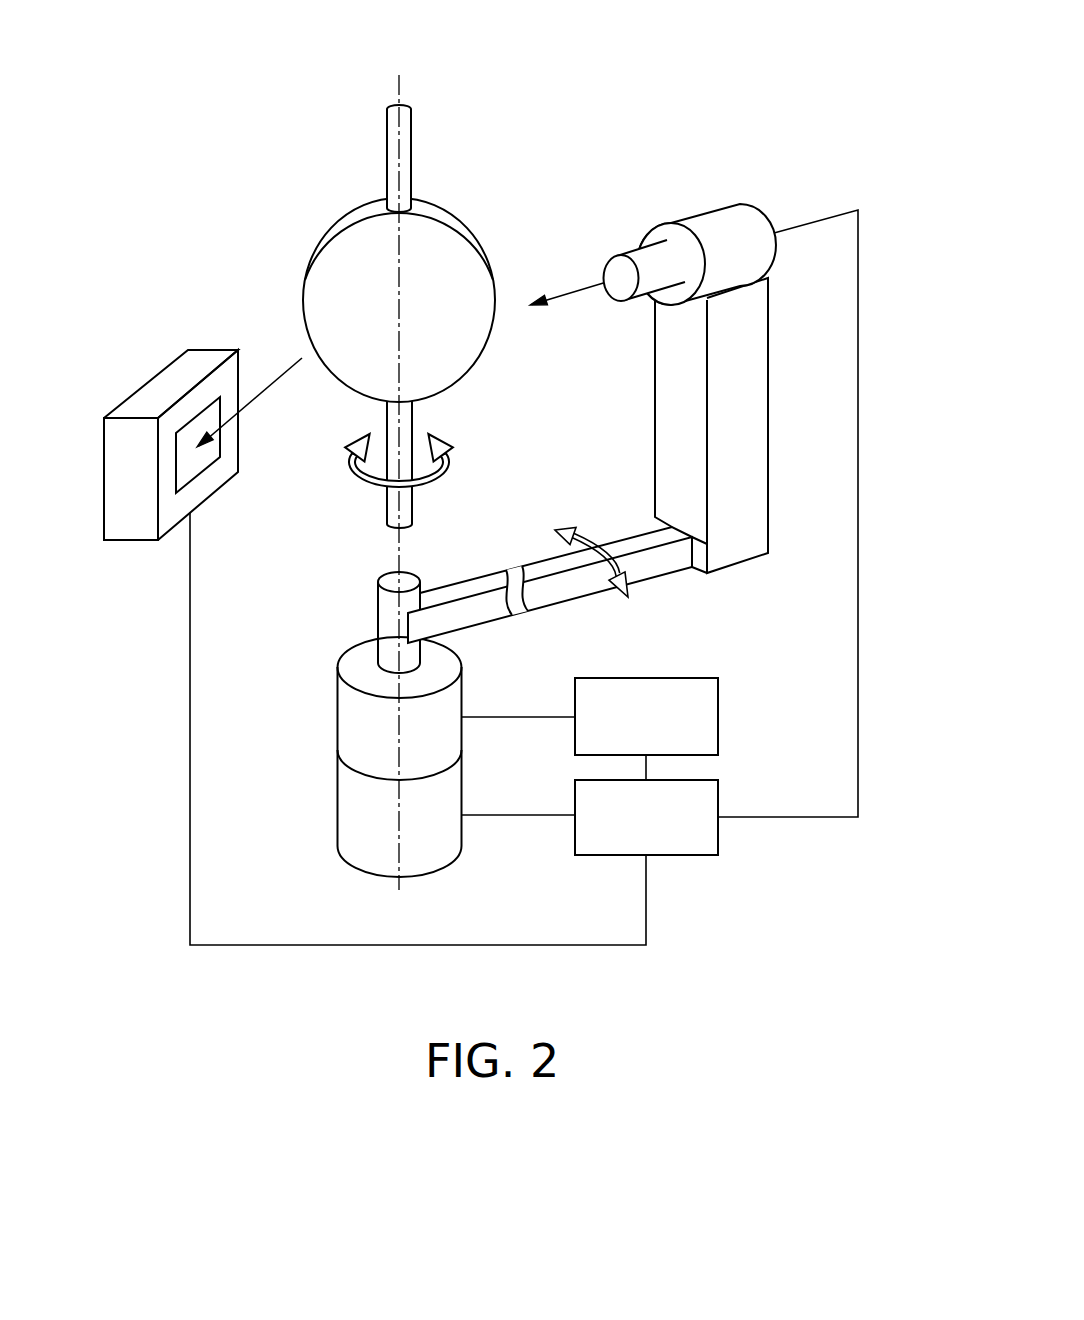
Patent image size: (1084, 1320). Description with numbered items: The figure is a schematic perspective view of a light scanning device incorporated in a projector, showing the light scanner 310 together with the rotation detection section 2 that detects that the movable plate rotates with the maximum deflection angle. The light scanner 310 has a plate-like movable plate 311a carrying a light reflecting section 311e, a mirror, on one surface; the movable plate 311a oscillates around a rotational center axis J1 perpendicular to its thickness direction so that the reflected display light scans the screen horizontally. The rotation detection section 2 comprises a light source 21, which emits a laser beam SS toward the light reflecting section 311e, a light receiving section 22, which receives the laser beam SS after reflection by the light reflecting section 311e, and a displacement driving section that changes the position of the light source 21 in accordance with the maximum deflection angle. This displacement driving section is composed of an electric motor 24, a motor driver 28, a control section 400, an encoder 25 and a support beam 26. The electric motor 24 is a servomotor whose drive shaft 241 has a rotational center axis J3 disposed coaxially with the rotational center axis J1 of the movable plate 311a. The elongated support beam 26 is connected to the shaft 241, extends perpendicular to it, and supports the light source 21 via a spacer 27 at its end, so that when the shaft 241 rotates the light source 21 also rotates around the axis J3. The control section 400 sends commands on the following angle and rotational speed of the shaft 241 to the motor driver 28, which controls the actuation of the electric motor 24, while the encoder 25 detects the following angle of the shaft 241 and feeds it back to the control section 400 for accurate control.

The rotation detection section 2 is at (648, 83).
The light scanner 310 is at (458, 133).
The movable plate 311a is at (470, 221).
The light reflecting section 311e is at (468, 348).
The light source 21 is at (762, 202).
The light receiving section 22 is at (155, 367).
The spacer 27 is at (760, 379).
The support beam 26 is at (534, 557).
The rotational center axis J1 is at (393, 511).
The rotational center axis J3 is at (393, 582).
The shaft 241 is at (380, 612).
The electric motor 24 is at (323, 722).
The encoder 25 is at (323, 819).
The motor driver 28 is at (720, 700).
The control section 400 is at (720, 795).
The laser beam SS is at (268, 383).